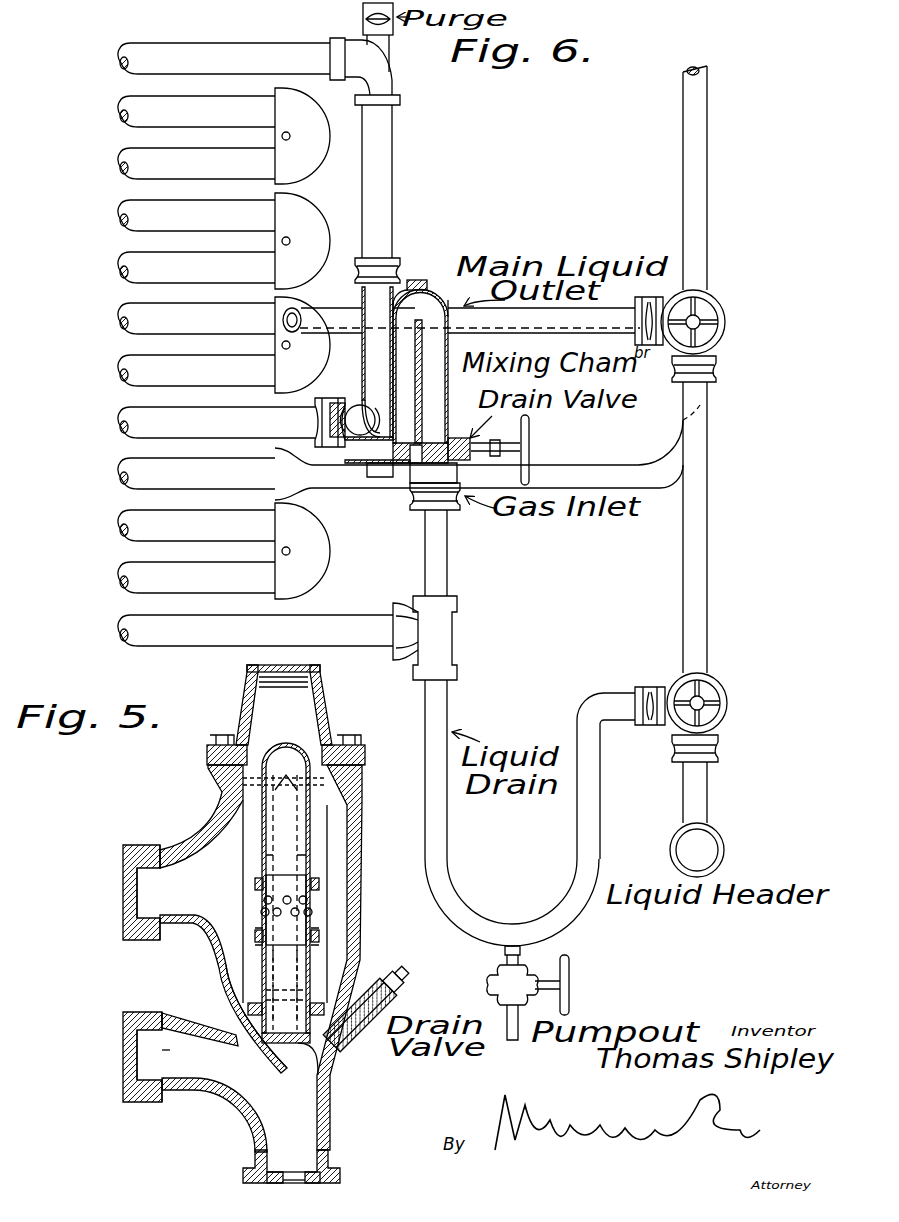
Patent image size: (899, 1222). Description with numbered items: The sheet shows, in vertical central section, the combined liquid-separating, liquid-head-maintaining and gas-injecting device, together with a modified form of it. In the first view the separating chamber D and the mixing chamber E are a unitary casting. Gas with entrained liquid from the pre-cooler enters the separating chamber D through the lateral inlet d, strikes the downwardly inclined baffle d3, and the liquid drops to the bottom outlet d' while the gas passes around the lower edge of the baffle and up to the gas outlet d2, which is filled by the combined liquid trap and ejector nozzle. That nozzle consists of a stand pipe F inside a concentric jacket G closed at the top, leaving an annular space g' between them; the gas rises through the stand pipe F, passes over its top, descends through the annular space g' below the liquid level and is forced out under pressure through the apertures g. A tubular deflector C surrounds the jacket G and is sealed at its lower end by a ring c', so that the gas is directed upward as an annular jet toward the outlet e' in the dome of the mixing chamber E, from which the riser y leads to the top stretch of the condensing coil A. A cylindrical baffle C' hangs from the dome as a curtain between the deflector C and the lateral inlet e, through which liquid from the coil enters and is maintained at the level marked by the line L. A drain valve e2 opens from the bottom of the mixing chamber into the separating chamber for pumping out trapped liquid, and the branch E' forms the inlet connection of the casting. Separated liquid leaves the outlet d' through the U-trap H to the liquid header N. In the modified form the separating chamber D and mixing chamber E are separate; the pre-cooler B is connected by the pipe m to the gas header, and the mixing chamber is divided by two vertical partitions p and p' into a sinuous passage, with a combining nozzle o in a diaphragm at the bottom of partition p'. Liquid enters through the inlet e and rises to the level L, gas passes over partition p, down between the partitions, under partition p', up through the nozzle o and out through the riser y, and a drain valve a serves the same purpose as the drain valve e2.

In FIG. 6, the condensing coil A is at (131, 168).
In FIG. 6, the pre-cooler B is at (128, 476).
In FIG. 6, the riser y is at (394, 186).
In FIG. 6, the liquid level line L is at (377, 327).
In FIG. 5, the liquid level line L is at (332, 745).
In FIG. 6, the mixing chamber E is at (454, 381).
In FIG. 6, the drain valve a is at (470, 448).
In FIG. 6, the first vertical partition p is at (375, 362).
In FIG. 6, the second vertical partition p' is at (370, 418).
In FIG. 6, the nozzle o is at (340, 386).
In FIG. 6, the lateral inlet e is at (337, 434).
In FIG. 5, the lateral inlet e is at (122, 892).
In FIG. 6, the pipe m is at (624, 478).
In FIG. 6, the separating chamber D is at (443, 628).
In FIG. 5, the separating chamber D is at (307, 1098).
In FIG. 6, the U-trap H is at (495, 921).
In FIG. 6, the liquid header N is at (725, 852).
In FIG. 5, the outlet e' is at (284, 705).
In FIG. 5, the inlet branch E' is at (223, 939).
In FIG. 5, the cylindrical baffle C' is at (327, 867).
In FIG. 5, the stand pipe F is at (293, 840).
In FIG. 5, the jacket G is at (313, 860).
In FIG. 5, the annular space g' is at (249, 870).
In FIG. 5, the apertures g is at (328, 902).
In FIG. 5, the deflector C is at (291, 947).
In FIG. 5, the ring c' is at (259, 934).
In FIG. 5, the drain valve e2 is at (374, 993).
In FIG. 5, the lateral inlet d is at (170, 1082).
In FIG. 5, the gas outlet d2 is at (320, 1075).
In FIG. 5, the baffle d3 is at (277, 1063).
In FIG. 5, the outlet d' is at (323, 1155).